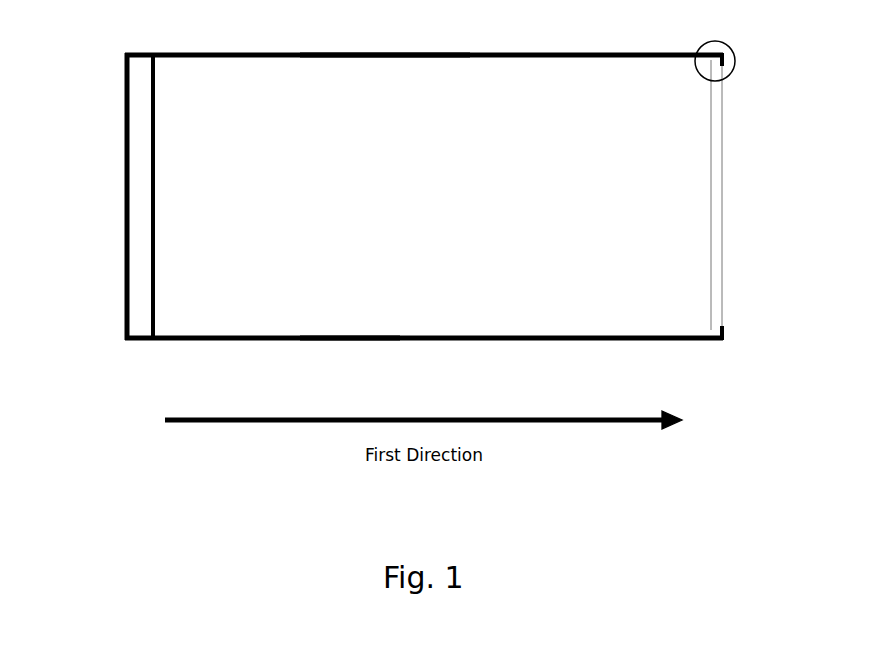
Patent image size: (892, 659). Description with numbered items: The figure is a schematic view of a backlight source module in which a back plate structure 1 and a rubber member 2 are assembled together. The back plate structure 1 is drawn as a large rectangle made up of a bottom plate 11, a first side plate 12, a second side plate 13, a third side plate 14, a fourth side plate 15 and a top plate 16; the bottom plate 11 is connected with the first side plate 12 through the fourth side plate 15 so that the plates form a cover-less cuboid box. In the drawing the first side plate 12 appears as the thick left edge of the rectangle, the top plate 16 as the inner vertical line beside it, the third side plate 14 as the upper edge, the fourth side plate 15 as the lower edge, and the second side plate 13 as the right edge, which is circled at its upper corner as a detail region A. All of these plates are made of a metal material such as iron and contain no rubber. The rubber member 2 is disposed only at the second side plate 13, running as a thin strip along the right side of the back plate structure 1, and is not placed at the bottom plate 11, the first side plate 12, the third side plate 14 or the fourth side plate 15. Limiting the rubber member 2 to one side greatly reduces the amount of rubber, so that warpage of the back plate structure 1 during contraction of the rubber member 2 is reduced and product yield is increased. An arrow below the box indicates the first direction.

The back plate structure 1 is at (533, 82).
The rubber member 2 is at (718, 195).
The bottom plate 11 is at (370, 85).
The first side plate 12 is at (125, 218).
The second side plate 13 is at (729, 55).
The third side plate 14 is at (425, 55).
The fourth side plate 15 is at (327, 340).
The top plate 16 is at (142, 150).
The detail region A is at (703, 48).